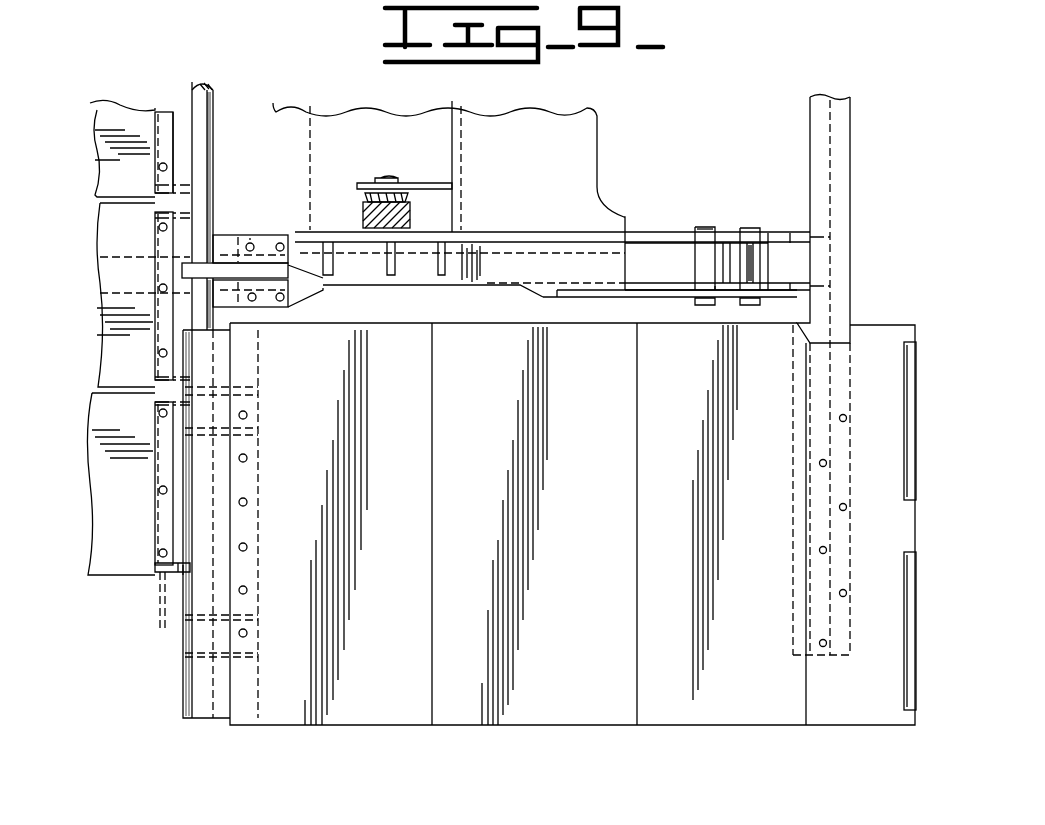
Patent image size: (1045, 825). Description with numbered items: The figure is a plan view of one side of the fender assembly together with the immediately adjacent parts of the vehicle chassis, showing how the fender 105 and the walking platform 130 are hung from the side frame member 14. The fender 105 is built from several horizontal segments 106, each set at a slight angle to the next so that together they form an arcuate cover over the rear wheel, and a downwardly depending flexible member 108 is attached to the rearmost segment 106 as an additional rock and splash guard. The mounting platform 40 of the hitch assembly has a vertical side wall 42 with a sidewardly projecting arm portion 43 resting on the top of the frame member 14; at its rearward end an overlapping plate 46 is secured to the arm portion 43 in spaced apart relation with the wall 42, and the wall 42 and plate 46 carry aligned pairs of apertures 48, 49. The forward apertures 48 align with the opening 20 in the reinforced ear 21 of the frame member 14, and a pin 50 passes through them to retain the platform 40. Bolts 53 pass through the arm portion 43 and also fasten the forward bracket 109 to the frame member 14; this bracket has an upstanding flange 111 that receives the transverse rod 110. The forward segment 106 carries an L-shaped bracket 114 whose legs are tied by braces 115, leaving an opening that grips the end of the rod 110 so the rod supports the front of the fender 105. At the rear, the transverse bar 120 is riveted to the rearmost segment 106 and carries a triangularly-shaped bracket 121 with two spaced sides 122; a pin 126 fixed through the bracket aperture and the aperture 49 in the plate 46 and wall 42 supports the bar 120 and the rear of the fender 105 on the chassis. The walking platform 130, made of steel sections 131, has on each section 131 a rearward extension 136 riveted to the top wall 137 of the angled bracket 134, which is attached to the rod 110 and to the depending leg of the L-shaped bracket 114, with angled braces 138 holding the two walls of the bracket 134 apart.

The side frame member 14 is at (87, 283).
The opening 20 is at (697, 268).
The reinforced ear 21 is at (678, 281).
The mounting platform 40 is at (538, 184).
The vertical side wall 42 is at (626, 215).
The flange or arm portion 43 is at (422, 272).
The overlapping plate 46 is at (635, 293).
The aperture 48 is at (715, 288).
The aperture 49 is at (718, 238).
The pin 50 is at (702, 232).
The bolt 53 is at (248, 238).
The fender 105 is at (590, 730).
The horizontal segment 106 is at (472, 703).
The flexible member 108 is at (913, 452).
The forward bracket 109 is at (224, 238).
The transverse rod 110 is at (205, 103).
The upstanding flange 111 is at (286, 273).
The L-shaped bracket 114 is at (220, 365).
The brace 115 is at (252, 434).
The transverse bar 120 is at (840, 213).
The triangularly-shaped bracket 121 is at (774, 236).
The side 122 is at (790, 240).
The pin 126 is at (743, 253).
The walking platform 130 is at (131, 108).
The section 131 is at (115, 158).
The angled bracket 134 is at (180, 572).
The rearward extension 136 is at (150, 532).
The top wall 137 is at (182, 118).
The angled brace 138 is at (182, 183).